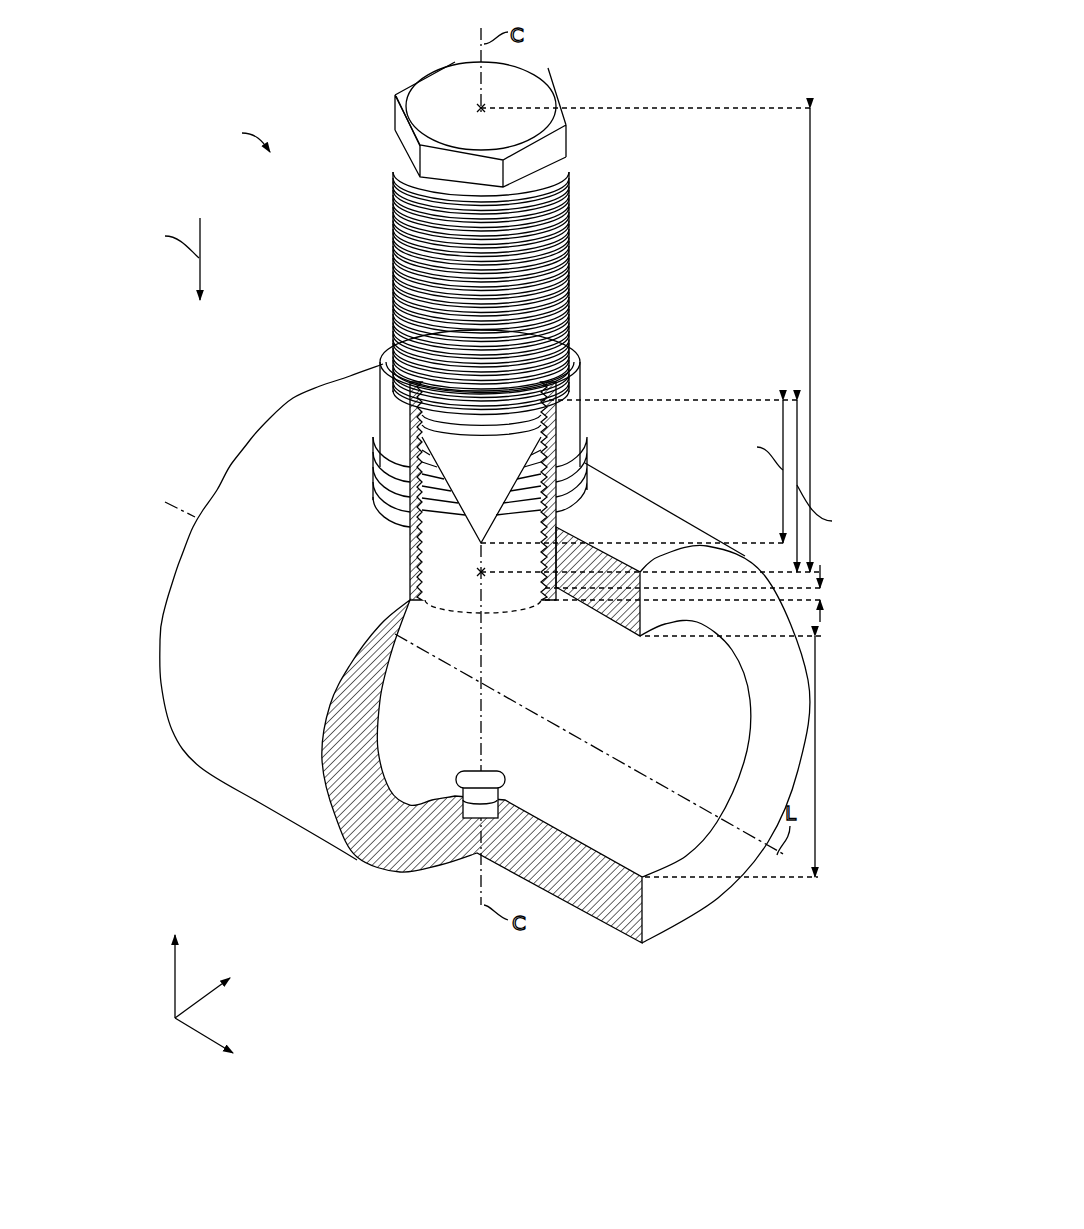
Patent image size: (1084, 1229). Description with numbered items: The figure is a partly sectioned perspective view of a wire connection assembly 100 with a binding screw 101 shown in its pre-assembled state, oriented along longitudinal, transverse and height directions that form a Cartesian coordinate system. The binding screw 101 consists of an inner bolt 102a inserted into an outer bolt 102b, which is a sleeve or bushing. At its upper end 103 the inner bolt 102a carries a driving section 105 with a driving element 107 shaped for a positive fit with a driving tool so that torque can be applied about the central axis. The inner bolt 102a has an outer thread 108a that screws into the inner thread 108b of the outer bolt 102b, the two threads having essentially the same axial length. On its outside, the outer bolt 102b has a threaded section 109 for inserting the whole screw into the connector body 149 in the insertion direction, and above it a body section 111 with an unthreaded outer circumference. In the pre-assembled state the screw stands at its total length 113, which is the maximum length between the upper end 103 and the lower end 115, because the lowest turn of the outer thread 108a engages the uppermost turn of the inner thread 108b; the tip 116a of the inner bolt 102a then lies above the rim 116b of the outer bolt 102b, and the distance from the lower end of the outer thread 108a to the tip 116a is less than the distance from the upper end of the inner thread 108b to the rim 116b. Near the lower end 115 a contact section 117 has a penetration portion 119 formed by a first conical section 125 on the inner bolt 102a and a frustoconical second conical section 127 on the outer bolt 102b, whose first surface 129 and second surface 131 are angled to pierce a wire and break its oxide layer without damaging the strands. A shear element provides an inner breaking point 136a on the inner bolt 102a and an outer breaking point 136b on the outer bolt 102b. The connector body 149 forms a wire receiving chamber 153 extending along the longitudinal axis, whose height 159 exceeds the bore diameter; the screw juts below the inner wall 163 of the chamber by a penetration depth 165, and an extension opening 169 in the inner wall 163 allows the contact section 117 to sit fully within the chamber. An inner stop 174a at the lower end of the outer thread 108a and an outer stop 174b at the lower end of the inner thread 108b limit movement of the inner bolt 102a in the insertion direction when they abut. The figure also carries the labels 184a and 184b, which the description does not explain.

The wire connection assembly 100 is at (672, 296).
The binding screw 101 is at (583, 77).
The inner bolt 102a is at (384, 252).
The outer bolt 102b is at (370, 412).
The upper end 103 is at (440, 80).
The driving section 105 is at (396, 100).
The driving element 107 is at (556, 140).
The outer thread 108a is at (569, 285).
The inner thread 108b is at (552, 560).
The threaded section 109 is at (560, 497).
The body section 111 is at (569, 197).
The total length 113 is at (810, 365).
The lower end 115 is at (418, 604).
The tip 116a is at (480, 602).
The rim 116b is at (552, 602).
The contact section 117 is at (497, 622).
The penetration portion 119 is at (392, 493).
The first conical section 125 is at (400, 470).
The second conical section 127 is at (405, 600).
The first surface 129 is at (392, 520).
The second surface 131 is at (403, 568).
The inner breaking point 136a is at (392, 250).
The outer breaking point 136b is at (585, 432).
The connector body 149 is at (262, 770).
The wire receiving chamber 153 is at (622, 831).
The height 159 is at (816, 800).
The inner wall 163 is at (437, 868).
The penetration depth 165 is at (820, 620).
The extension opening 169 is at (488, 768).
The inner stop 174a is at (383, 370).
The outer stop 174b is at (450, 556).
The thread pitch of screw 184a is at (395, 268).
The thread pitch of sleeve 184b is at (648, 499).